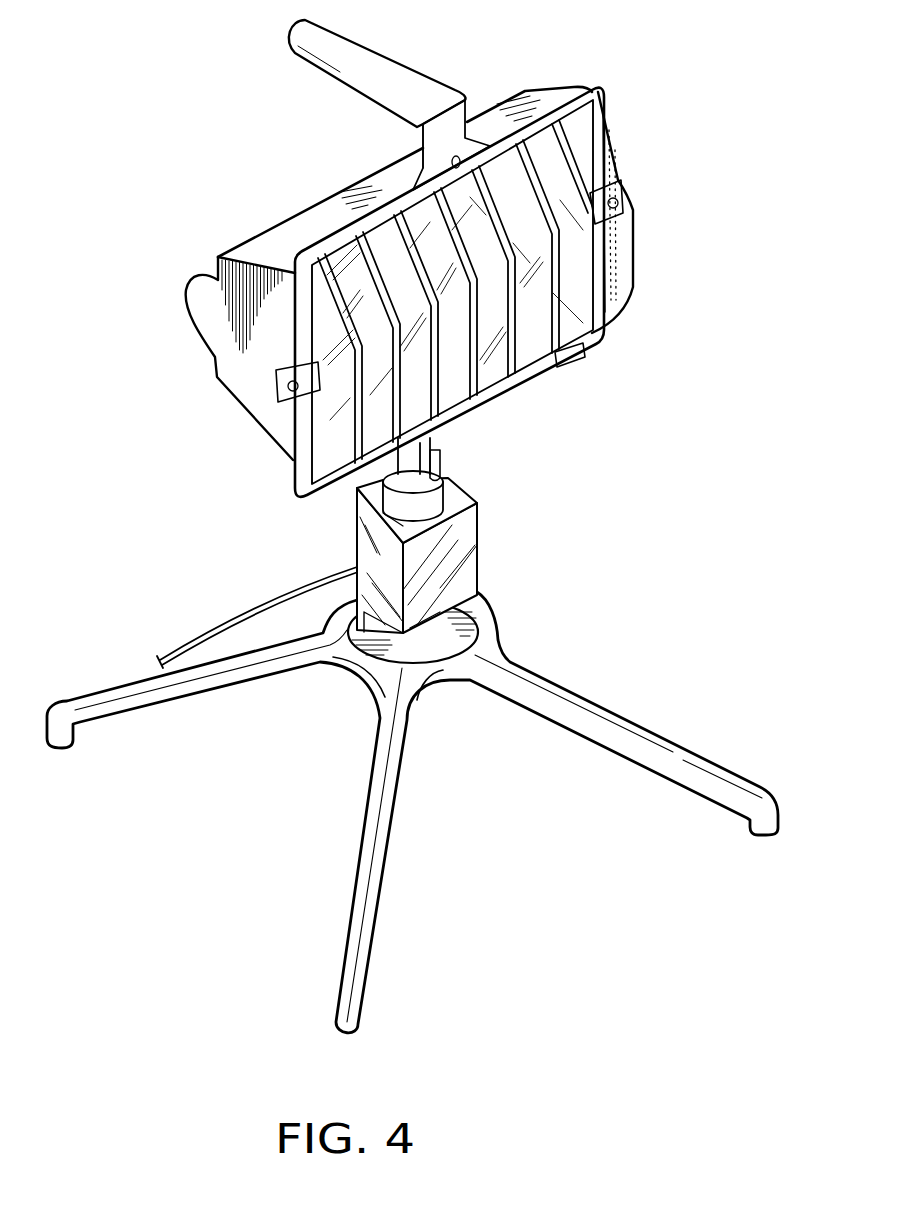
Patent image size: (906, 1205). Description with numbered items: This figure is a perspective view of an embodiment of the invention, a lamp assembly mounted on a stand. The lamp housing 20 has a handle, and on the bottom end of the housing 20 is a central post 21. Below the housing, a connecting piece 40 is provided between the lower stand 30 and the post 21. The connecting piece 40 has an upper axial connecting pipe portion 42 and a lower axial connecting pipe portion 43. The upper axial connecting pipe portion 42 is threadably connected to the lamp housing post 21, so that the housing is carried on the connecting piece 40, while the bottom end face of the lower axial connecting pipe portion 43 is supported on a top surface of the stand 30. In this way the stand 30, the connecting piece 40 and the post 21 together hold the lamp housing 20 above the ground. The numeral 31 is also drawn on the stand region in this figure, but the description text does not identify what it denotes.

The lamp housing 20 is at (250, 395).
The central post 21 is at (428, 458).
The lower stand 30 is at (390, 787).
The hub 31 is at (437, 650).
The connecting piece 40 is at (375, 558).
The upper axial connecting pipe portion 42 is at (427, 506).
The lower axial connecting pipe portion 43 is at (453, 614).